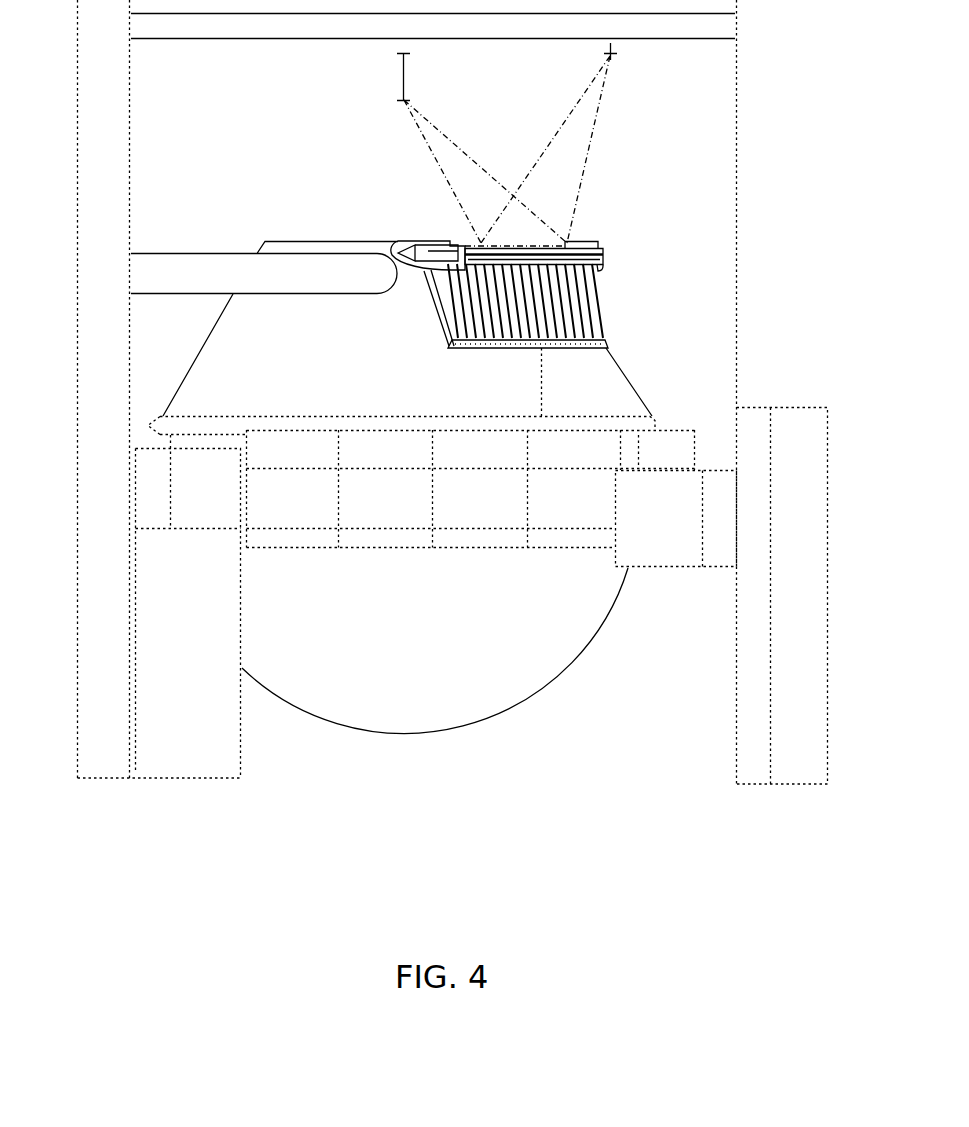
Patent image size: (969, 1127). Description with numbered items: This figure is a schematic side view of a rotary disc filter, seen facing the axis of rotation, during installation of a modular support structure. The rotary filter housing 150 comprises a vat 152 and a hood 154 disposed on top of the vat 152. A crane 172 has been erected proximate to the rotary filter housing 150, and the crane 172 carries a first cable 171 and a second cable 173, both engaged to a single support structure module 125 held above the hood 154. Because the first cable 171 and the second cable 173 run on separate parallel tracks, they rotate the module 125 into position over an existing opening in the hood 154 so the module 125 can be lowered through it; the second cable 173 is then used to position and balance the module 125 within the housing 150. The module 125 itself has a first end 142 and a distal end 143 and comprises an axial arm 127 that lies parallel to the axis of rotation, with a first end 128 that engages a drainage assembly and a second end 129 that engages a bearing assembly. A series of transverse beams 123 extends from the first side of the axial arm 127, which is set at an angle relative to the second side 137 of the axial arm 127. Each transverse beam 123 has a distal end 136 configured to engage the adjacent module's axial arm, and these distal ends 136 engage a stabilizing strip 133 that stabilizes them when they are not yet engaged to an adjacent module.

The transverse beams 123 is at (598, 312).
The support structure module 125 is at (607, 214).
The axial arm 127 is at (540, 259).
The first end of the axial arm 128 is at (399, 226).
The second end of the axial arm 129 is at (605, 250).
The stabilizing strip 133 is at (566, 340).
The distal end of the transverse beam 136 is at (474, 362).
The second side of the axial arm 137 is at (515, 241).
The first end of the module 142 is at (404, 304).
The distal end of the module 143 is at (626, 326).
The rotary filter housing 150 is at (336, 140).
The vat 152 is at (492, 715).
The hood 154 is at (292, 245).
The first cable 171 is at (431, 121).
The crane 172 is at (771, 146).
The second cable 173 is at (593, 119).